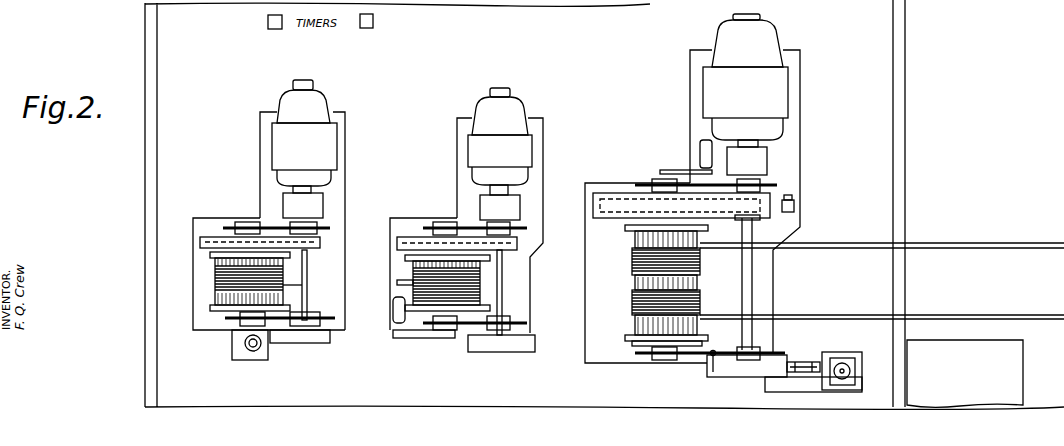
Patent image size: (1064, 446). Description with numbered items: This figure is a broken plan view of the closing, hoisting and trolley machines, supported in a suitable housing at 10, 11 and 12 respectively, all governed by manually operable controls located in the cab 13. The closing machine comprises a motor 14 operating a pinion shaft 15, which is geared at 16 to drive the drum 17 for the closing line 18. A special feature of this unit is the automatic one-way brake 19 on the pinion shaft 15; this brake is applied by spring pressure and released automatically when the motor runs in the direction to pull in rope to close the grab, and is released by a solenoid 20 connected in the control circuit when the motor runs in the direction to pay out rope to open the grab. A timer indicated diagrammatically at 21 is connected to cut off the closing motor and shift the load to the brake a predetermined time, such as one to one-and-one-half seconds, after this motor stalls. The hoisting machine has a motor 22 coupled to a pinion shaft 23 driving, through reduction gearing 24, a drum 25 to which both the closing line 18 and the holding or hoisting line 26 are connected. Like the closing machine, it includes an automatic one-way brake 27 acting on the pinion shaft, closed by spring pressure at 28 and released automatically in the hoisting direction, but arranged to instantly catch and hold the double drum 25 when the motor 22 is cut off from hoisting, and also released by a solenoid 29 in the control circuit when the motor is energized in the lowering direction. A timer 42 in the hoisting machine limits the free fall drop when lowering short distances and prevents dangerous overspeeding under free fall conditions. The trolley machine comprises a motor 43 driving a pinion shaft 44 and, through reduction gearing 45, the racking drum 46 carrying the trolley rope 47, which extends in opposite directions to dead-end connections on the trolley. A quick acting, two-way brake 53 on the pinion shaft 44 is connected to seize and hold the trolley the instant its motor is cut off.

The closing machine housing 10 is at (372, 124).
The hoisting machine housing 11 is at (819, 100).
The trolley machine housing 12 is at (556, 138).
The cab 13 is at (1005, 366).
The motor 14 is at (322, 108).
The pinion shaft 15 is at (310, 293).
The gearing 16 is at (213, 240).
The drum 17 is at (220, 290).
The closing line 18 is at (290, 285).
The automatic one-way brake 19 is at (313, 338).
The solenoid 20 is at (245, 357).
The timer 21 is at (268, 21).
The motor 22 is at (768, 45).
The pinion shaft 23 is at (752, 290).
The reduction gearing 24 is at (625, 192).
The drum 25 is at (640, 325).
The holding or hoisting line 26 is at (873, 245).
The automatic one-way brake 27 is at (735, 380).
The spring pressure 28 is at (803, 365).
The solenoid 29 is at (840, 355).
The timer 42 is at (373, 21).
The motor 43 is at (522, 108).
The pinion shaft 44 is at (500, 272).
The reduction gearing 45 is at (412, 234).
The racking drum 46 is at (413, 258).
The trolley rope 47 is at (403, 285).
The two-way brake 53 is at (513, 343).